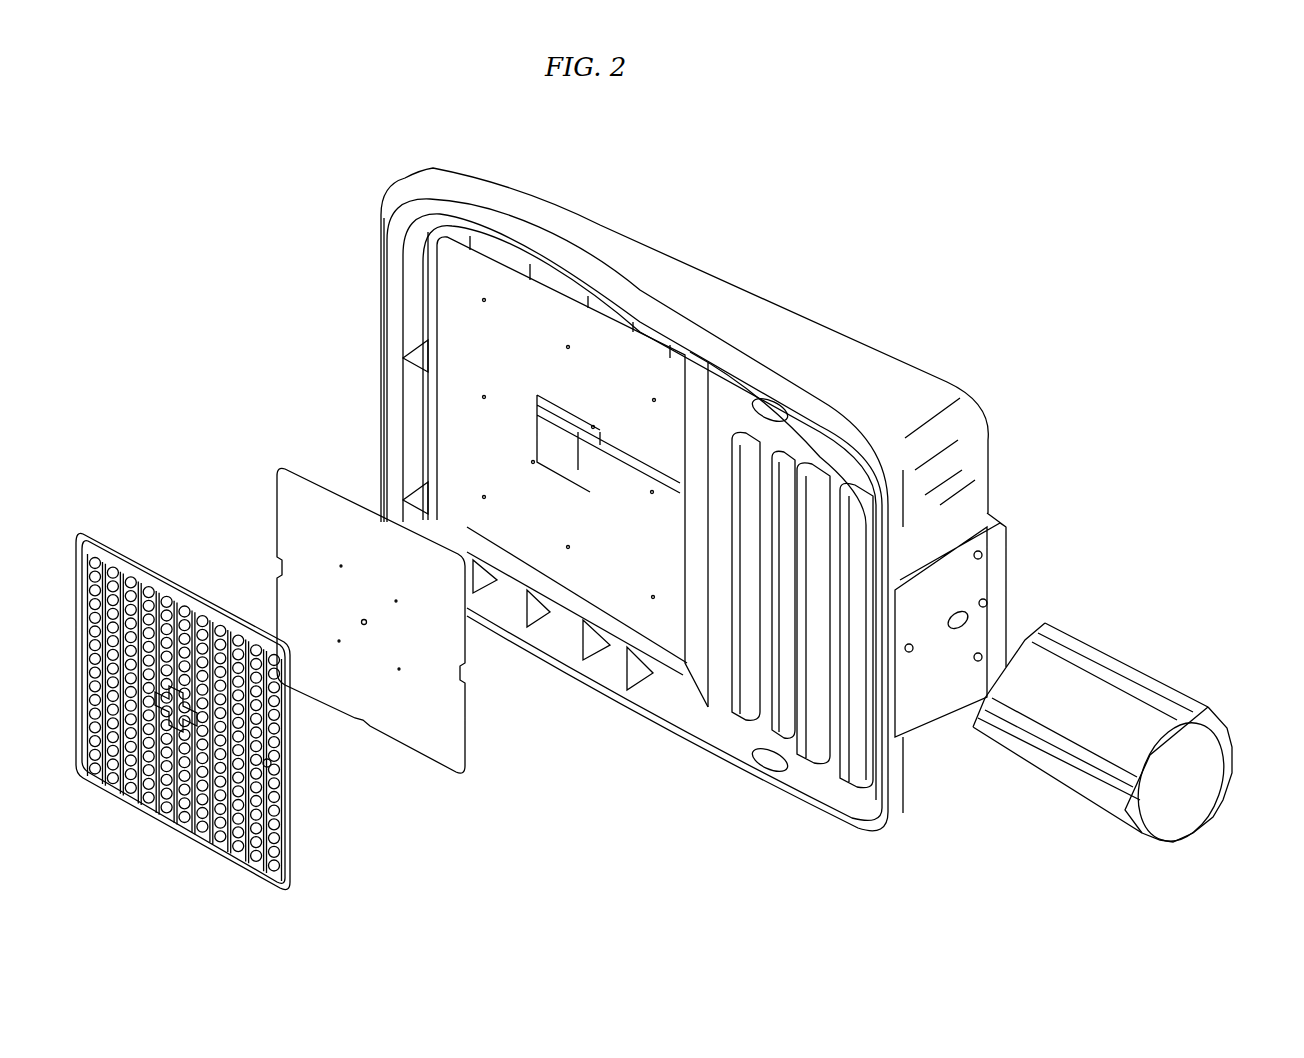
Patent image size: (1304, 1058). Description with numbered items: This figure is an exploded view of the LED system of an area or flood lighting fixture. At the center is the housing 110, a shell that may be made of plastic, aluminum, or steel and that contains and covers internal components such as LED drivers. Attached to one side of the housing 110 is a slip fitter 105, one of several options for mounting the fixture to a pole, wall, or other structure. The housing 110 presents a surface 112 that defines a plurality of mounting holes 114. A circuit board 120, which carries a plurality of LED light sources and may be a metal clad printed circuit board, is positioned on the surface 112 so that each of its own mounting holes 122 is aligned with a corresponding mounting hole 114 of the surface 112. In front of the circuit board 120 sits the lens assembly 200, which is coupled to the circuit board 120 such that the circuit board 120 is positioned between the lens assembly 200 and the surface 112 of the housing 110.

The slip fitter 105 is at (1110, 642).
The housing 110 is at (693, 499).
The surface 112 is at (527, 390).
The mounting holes 114 is at (480, 298).
The circuit board 120 is at (362, 577).
The mounting holes 122 is at (335, 565).
The lens assembly 200 is at (84, 532).